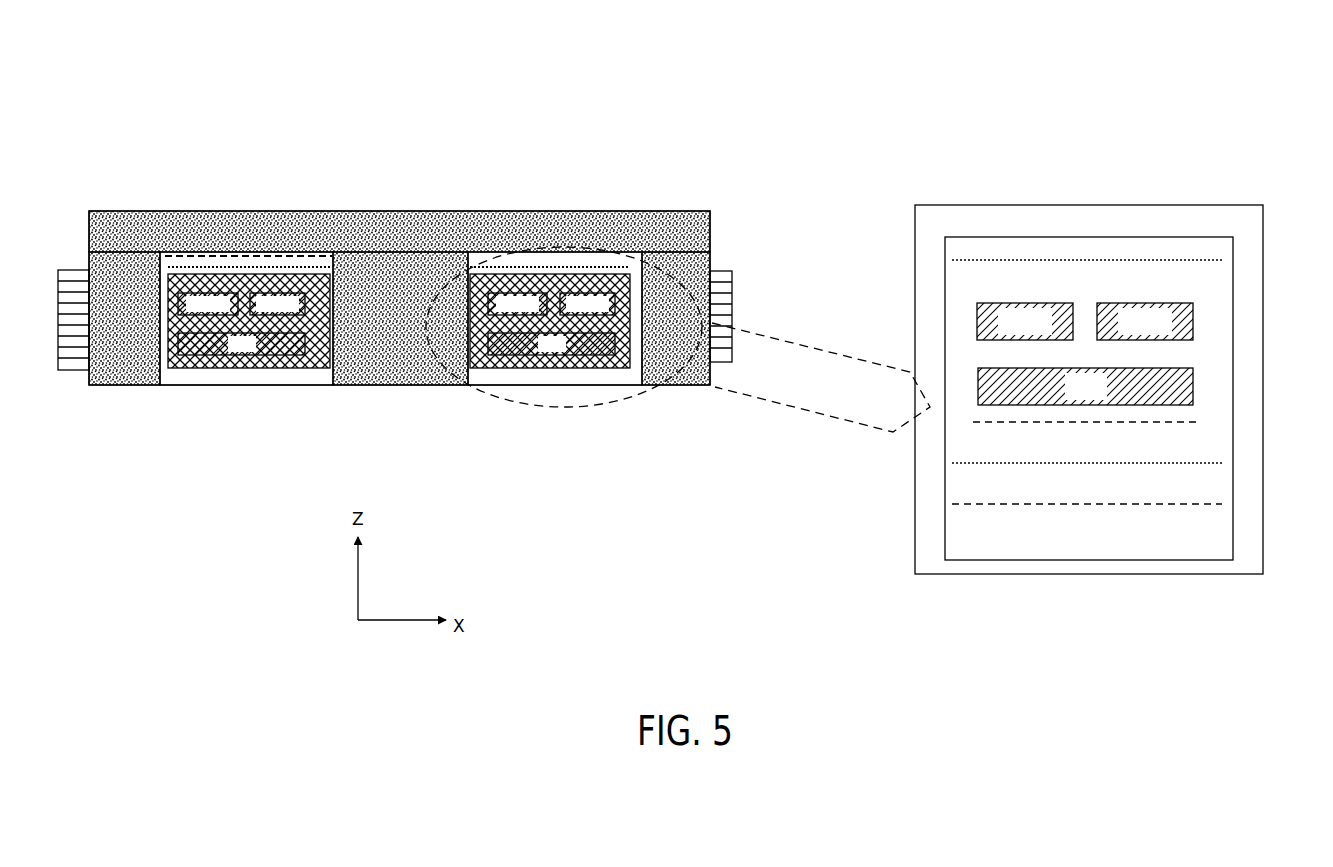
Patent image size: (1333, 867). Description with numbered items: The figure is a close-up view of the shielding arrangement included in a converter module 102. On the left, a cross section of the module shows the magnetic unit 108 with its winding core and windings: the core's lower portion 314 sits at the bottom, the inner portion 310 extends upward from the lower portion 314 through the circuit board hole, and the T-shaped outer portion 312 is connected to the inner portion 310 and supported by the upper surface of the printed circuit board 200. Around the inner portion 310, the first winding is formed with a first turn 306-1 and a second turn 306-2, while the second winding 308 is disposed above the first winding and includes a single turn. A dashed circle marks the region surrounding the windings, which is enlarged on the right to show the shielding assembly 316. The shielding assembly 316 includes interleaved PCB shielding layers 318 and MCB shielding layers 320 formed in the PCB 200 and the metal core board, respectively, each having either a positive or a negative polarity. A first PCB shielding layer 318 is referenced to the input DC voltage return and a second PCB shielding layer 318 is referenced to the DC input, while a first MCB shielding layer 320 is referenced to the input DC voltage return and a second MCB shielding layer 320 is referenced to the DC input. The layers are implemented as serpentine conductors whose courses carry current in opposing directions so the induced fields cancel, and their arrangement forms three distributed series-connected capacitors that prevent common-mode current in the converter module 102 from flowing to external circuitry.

The converter module 102 is at (98, 138).
The magnetic unit 108 is at (480, 324).
The printed circuit board 200 is at (207, 281).
The first turn 306-1 is at (232, 296).
The second turn 306-2 is at (284, 296).
The second winding 308 is at (255, 356).
The inner portion 310 is at (427, 368).
The outer portion 312 is at (528, 226).
The lower portion 314 is at (135, 372).
The shielding assembly 316 is at (603, 243).
The PCB shielding layer 318 is at (1192, 255).
The MCB shielding layer 320 is at (1192, 487).